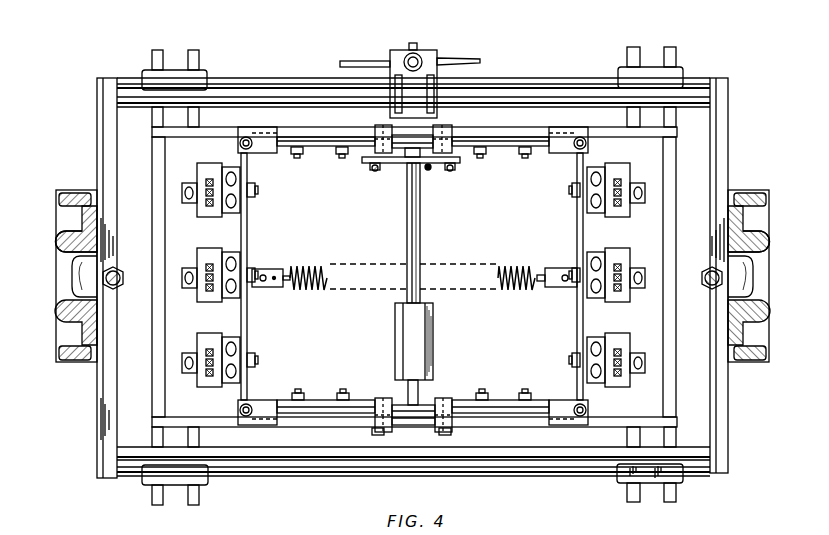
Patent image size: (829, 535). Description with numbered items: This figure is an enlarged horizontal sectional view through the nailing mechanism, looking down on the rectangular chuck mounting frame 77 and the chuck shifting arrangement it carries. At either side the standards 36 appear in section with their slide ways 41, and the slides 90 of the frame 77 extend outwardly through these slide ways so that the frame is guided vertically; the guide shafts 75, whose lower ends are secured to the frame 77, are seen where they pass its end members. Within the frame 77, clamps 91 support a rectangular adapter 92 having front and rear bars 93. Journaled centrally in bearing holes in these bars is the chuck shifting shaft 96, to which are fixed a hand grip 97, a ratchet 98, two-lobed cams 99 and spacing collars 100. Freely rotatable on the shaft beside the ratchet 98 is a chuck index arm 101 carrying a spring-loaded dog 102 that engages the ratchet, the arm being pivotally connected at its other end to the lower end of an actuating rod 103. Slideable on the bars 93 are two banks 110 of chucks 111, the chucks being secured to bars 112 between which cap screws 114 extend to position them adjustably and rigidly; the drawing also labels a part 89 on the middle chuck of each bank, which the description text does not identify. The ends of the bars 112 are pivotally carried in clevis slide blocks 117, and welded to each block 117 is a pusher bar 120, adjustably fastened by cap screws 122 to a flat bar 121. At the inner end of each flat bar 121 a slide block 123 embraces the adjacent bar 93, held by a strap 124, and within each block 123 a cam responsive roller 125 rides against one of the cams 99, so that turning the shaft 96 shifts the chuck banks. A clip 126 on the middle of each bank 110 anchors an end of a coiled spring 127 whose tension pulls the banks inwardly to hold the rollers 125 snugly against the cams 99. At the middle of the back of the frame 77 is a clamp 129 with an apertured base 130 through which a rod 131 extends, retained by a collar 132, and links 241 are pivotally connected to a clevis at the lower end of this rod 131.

The standards 36 is at (58, 208).
The slide ways 41 is at (76, 256).
The guide shafts 75 is at (121, 273).
The rectangular chuck mounting frame 77 is at (113, 404).
The sensor module 89 is at (210, 290).
The slides 90 is at (78, 292).
The clamps 91 is at (147, 69).
The rectangular adapter 92 is at (160, 305).
The front and rear bars 93 is at (297, 127).
The chuck shifting shaft 96 is at (421, 238).
The hand grip 97 is at (433, 340).
The ratchet 98 is at (431, 171).
The cams 99 is at (420, 140).
The spacing collars 100 is at (405, 172).
The chuck index arm 101 is at (370, 162).
The dog 102 is at (456, 167).
The actuating rod 103 is at (374, 173).
The banks of chucks 110 is at (417, 276).
The chucks 111 is at (210, 218).
The bars 112 is at (248, 330).
The cap screws 114 is at (259, 361).
The clevis slide blocks 117 is at (258, 128).
The pusher bar 120 is at (330, 140).
The flat bar 121 is at (336, 148).
The cap screws 122 is at (296, 158).
The slide block 123 is at (377, 127).
The strap 124 is at (375, 430).
The cam responsive roller 125 is at (455, 400).
The clip 126 is at (264, 288).
The coiled spring 127 is at (325, 268).
The clamp 129 is at (443, 80).
The apertured base 130 is at (440, 53).
The rod 131 is at (406, 58).
The collar 132 is at (418, 50).
The links 241 is at (378, 62).